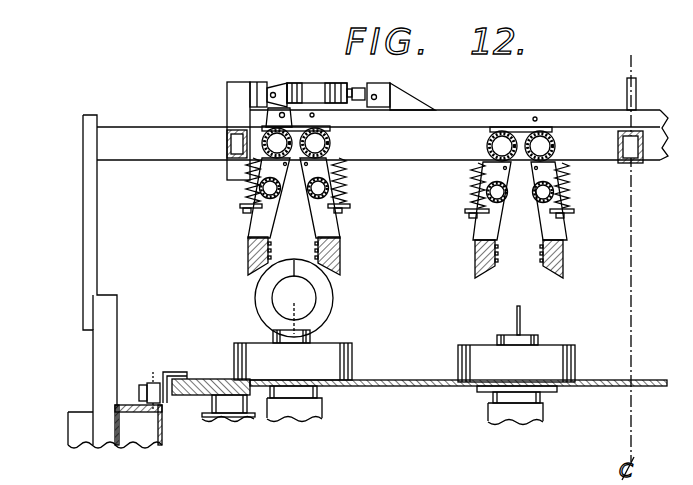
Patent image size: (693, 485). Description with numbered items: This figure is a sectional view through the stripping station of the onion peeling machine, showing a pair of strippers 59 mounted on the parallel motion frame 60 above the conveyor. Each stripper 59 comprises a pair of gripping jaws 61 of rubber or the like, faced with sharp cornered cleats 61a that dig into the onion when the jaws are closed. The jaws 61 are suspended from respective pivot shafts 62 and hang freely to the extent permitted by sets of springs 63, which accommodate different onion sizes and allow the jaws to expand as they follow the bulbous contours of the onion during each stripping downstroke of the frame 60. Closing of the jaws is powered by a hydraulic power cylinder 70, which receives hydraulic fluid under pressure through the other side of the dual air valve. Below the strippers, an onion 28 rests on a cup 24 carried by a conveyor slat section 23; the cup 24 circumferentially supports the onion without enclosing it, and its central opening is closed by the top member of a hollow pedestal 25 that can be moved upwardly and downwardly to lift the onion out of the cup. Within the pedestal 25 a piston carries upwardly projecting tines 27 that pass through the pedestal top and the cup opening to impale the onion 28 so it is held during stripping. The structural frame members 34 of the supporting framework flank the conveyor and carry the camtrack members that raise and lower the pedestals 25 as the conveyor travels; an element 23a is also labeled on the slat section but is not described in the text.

The hydraulic power cylinder 70 is at (311, 88).
The pivot shaft 62 is at (227, 143).
The springs 63 is at (247, 190).
The stripper 59 is at (262, 224).
The gripping jaw 61 is at (248, 255).
The cleats 61a is at (317, 249).
The parallel motion frame 60 is at (83, 268).
The onion 28 is at (333, 306).
The tines 27 is at (521, 313).
The cup 24 is at (458, 358).
The conveyor slat section 23 is at (433, 387).
The bolt 23a is at (153, 383).
The pedestal 25 is at (300, 399).
The structural frame member 34 is at (162, 441).